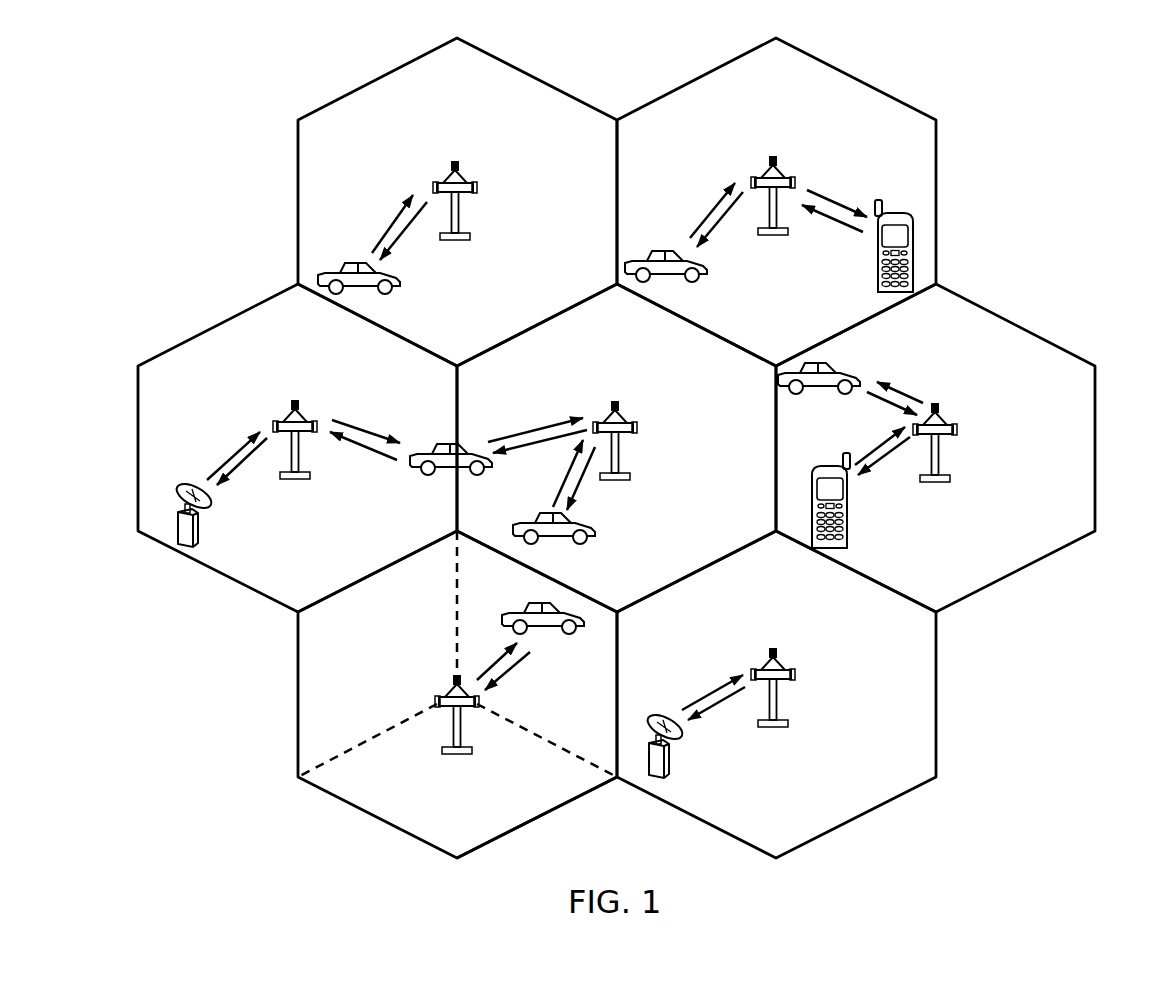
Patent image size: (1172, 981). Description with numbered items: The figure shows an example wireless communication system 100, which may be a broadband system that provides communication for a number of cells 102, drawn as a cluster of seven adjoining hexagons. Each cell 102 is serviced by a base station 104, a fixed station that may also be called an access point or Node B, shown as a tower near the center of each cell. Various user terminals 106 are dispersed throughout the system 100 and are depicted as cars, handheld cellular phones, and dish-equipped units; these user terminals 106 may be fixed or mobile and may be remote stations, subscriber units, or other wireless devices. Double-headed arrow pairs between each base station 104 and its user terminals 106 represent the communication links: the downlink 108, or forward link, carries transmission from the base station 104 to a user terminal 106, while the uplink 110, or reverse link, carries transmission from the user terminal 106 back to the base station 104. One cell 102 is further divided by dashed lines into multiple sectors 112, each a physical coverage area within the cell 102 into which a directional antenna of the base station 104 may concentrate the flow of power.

The wireless communication system 100 is at (1080, 125).
The cell 102 is at (385, 75).
The base station 104 is at (455, 162).
The user terminal 106 is at (398, 283).
The downlink 108 is at (397, 232).
The uplink 110 is at (395, 222).
The sector 112 is at (513, 815).